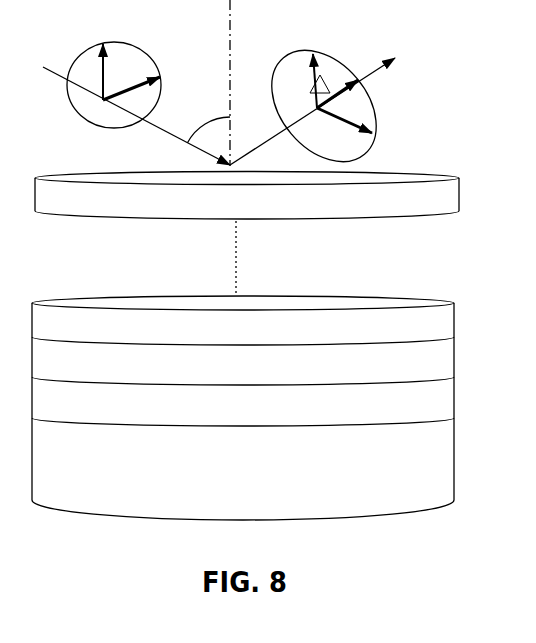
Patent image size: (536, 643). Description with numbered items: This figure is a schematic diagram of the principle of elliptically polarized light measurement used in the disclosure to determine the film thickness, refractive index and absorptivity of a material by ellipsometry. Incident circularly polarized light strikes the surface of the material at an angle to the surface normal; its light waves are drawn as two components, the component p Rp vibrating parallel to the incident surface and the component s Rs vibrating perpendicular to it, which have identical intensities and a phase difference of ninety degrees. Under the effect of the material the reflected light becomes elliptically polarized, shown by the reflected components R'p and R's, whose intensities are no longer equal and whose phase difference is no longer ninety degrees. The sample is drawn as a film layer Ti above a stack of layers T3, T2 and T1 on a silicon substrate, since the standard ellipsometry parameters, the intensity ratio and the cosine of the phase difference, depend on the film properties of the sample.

The component p intensity Rp is at (83, 55).
The component s intensity Rs is at (148, 79).
The reflected p-polarized component R'p is at (322, 62).
The reflected s-polarized component R's is at (369, 130).
The thin film layer Ti,ni,ki Ti is at (247, 196).
The layer T3,n3,k3 T3 is at (243, 331).
The layer T2,n2,k2 T2 is at (243, 370).
The layer T1,n1,k2 T1 is at (243, 410).